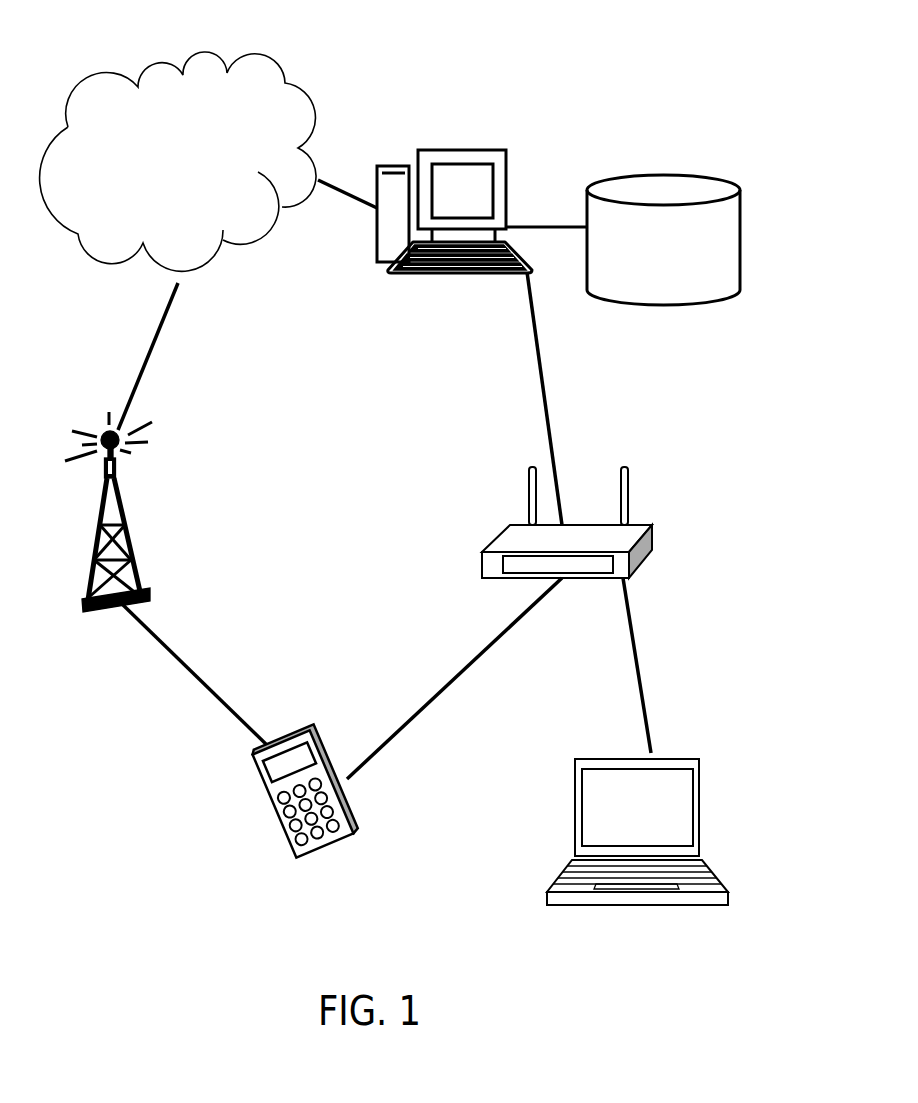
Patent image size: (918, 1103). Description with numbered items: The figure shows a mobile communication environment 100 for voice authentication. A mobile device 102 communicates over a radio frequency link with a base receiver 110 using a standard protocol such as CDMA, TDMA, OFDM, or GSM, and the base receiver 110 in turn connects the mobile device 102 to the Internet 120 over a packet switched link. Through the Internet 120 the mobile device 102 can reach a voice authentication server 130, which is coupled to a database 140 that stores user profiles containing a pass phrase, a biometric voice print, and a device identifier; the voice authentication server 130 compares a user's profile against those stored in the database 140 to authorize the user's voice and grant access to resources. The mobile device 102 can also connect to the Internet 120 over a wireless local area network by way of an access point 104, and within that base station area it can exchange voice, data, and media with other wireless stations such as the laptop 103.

The mobile communication environment 100 is at (385, 37).
The mobile device 102 is at (307, 732).
The laptop 103 is at (663, 753).
The access point 104 is at (640, 522).
The base receiver 110 is at (130, 513).
The Internet 120 is at (213, 253).
The voice authentication server 130 is at (493, 150).
The database 140 is at (740, 230).